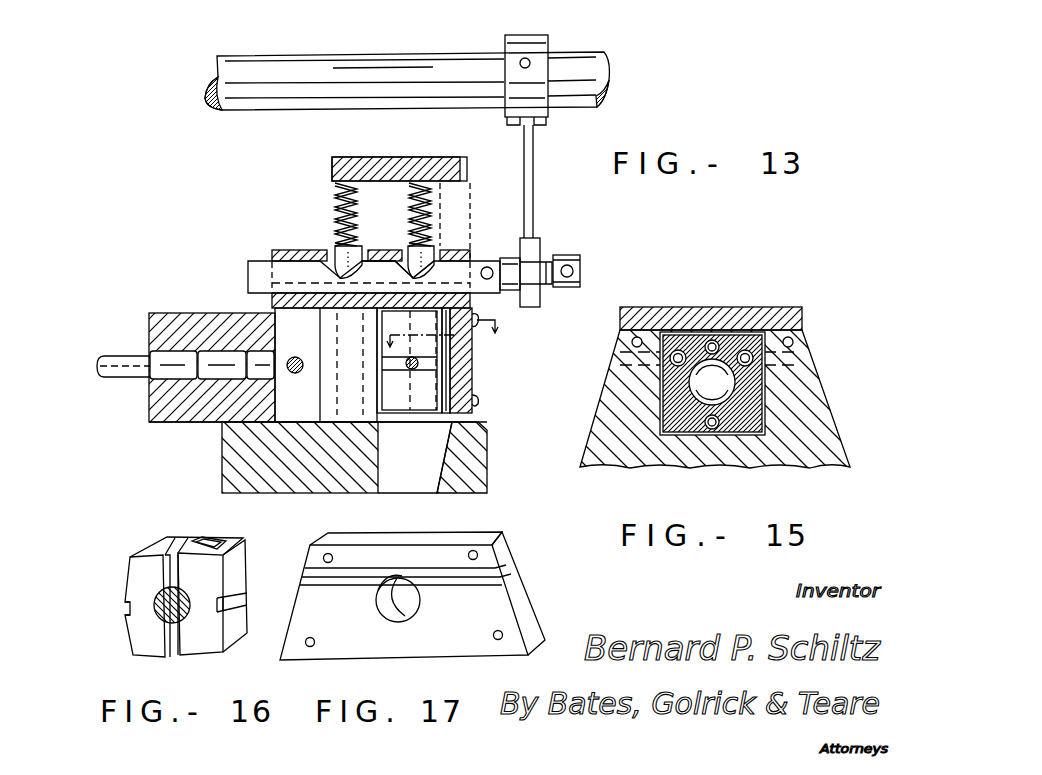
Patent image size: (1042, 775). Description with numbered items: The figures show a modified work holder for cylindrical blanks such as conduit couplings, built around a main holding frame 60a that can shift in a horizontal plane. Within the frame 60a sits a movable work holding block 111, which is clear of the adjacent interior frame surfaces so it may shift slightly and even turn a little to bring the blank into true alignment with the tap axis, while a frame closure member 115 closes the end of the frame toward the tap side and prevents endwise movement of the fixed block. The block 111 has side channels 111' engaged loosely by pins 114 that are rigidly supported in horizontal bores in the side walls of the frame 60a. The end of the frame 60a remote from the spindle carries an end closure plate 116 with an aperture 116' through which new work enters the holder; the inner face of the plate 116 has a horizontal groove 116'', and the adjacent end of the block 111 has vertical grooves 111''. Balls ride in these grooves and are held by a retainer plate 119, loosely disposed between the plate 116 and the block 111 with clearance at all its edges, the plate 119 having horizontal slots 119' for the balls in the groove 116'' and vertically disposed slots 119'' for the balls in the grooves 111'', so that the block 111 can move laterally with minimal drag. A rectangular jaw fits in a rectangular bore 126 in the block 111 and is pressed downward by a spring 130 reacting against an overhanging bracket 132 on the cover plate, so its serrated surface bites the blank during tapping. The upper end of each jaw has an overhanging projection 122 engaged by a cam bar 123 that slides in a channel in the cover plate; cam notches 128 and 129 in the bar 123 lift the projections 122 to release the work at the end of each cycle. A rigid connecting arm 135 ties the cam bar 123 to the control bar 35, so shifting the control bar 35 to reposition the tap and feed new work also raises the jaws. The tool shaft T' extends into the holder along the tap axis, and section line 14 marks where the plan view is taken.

In FIG. 13, the control bar 35 is at (456, 53).
In FIG. 13, the rigid connecting arm 135 is at (534, 152).
In FIG. 13, the overhanging bracket 132 is at (332, 169).
In FIG. 13, the springs 130 is at (356, 214).
In FIG. 13, the overhanging projections 122 is at (337, 251).
In FIG. 13, the cam bar 123 is at (474, 258).
In FIG. 13, the cam notch 128 is at (334, 273).
In FIG. 13, the cam notch 129 is at (412, 270).
In FIG. 13, the frame closure member 115 is at (160, 401).
In FIG. 13, the tool shaft T' is at (123, 354).
In FIG. 13, the movable work holding block 111 is at (409, 378).
In FIG. 16, the movable work holding block 111 is at (171, 602).
In FIG. 13, the pins 114 is at (410, 372).
In FIG. 13, the retainer plate 119 is at (479, 360).
In FIG. 15, the retainer plate 119 is at (774, 352).
In FIG. 13, the section line 14— 14 is at (451, 338).
In FIG. 13, the main holding frame 60a is at (232, 451).
In FIG. 15, the main holding frame 60a is at (608, 394).
In FIG. 15, the horizontal groove 116'' is at (740, 336).
In FIG. 17, the horizontal groove 116'' is at (438, 567).
In FIG. 15, the horizontal slots 119' is at (711, 322).
In FIG. 15, the vertically disposed slots 119'' is at (724, 356).
In FIG. 16, the rectangular bore 126 is at (230, 520).
In FIG. 16, the vertical grooves 111'' is at (150, 575).
In FIG. 16, the side channels 111' is at (192, 590).
In FIG. 17, the end closure plate 116 is at (432, 596).
In FIG. 17, the aperture 116' is at (417, 607).